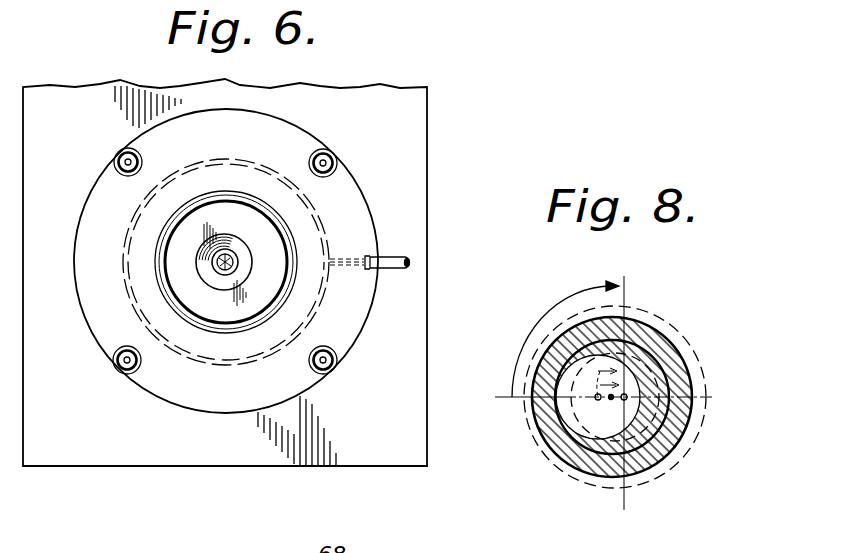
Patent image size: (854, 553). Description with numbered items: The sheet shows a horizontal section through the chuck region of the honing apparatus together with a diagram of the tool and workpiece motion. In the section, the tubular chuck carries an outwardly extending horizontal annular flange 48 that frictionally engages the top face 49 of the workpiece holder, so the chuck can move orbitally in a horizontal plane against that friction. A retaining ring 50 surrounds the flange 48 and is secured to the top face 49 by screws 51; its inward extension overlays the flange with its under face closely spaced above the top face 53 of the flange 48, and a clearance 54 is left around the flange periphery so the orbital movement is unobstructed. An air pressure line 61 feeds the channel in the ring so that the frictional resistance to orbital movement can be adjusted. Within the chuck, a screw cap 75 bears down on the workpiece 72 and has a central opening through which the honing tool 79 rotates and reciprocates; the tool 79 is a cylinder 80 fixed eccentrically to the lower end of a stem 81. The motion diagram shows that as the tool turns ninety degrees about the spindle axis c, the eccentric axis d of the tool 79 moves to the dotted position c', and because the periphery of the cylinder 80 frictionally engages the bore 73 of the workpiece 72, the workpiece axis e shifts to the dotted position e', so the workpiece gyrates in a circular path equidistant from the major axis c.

In FIG. 6, the top face 49 is at (427, 108).
In FIG. 6, the retaining ring 50 is at (81, 211).
In FIG. 6, the screws 51 is at (118, 154).
In FIG. 6, the horizontal annular flange 48 is at (150, 273).
In FIG. 6, the clearance 54 is at (352, 216).
In FIG. 6, the screw cap 75 is at (181, 230).
In FIG. 6, the top face of the flange 53 is at (287, 288).
In FIG. 6, the cylinder 80 is at (228, 271).
In FIG. 8, the cylinder 80 is at (590, 464).
In FIG. 6, the stem 81 is at (236, 258).
In FIG. 6, the air pressure line 61 is at (412, 246).
In FIG. 8, the workpiece 72 is at (650, 470).
In FIG. 8, the cylindrical bore 73 is at (654, 376).
In FIG. 8, the honing tool 79 is at (570, 454).
In FIG. 8, the axis of the spindle c is at (706, 449).
In FIG. 8, the dotted-line position of the eccentric tool axis c' is at (615, 384).
In FIG. 8, the eccentric axis of the tool d is at (612, 400).
In FIG. 8, the axis of the workpiece e is at (617, 516).
In FIG. 8, the dotted-line position of the workpiece axis e' is at (676, 382).